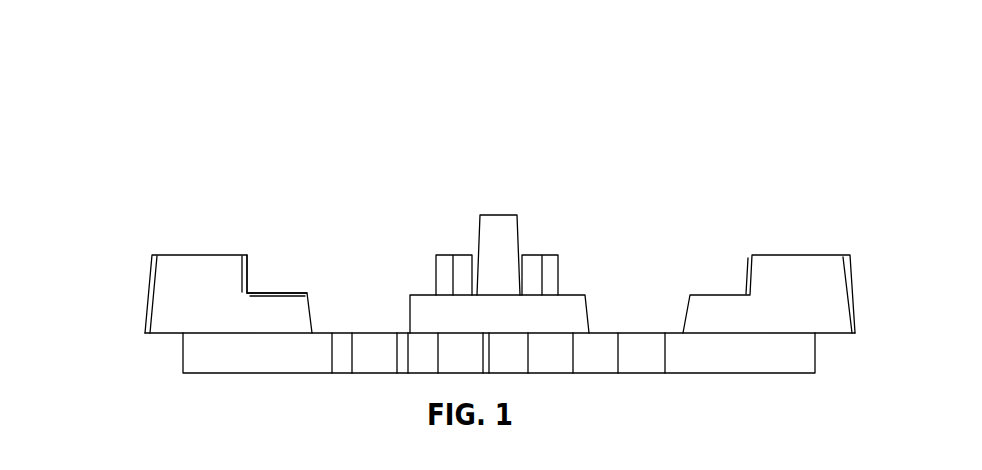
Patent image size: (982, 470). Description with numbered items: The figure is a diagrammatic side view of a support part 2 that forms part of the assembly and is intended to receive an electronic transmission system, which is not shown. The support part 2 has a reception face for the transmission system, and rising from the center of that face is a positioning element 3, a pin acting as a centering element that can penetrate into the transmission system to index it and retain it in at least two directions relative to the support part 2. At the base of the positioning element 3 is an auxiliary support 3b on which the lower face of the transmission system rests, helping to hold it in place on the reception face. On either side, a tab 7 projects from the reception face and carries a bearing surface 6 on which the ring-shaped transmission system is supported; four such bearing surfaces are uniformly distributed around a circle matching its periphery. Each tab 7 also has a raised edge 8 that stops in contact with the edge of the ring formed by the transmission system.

The support part 2 is at (604, 320).
The positioning element 3 is at (487, 213).
The auxiliary support 3b is at (438, 312).
The bearing surface 6 is at (293, 293).
The tab 7 is at (150, 289).
The raised edge 8 is at (253, 263).